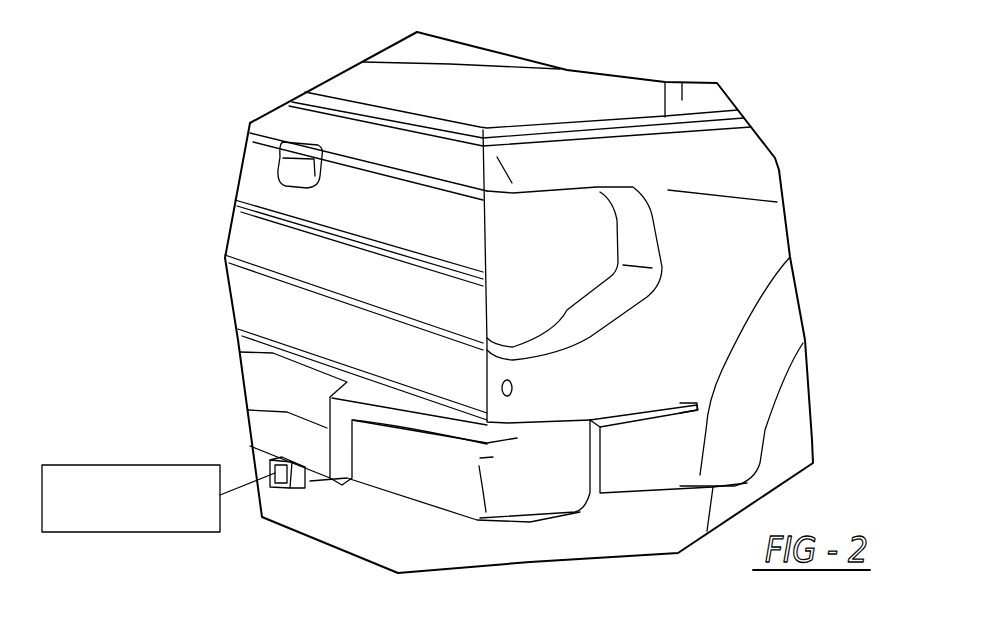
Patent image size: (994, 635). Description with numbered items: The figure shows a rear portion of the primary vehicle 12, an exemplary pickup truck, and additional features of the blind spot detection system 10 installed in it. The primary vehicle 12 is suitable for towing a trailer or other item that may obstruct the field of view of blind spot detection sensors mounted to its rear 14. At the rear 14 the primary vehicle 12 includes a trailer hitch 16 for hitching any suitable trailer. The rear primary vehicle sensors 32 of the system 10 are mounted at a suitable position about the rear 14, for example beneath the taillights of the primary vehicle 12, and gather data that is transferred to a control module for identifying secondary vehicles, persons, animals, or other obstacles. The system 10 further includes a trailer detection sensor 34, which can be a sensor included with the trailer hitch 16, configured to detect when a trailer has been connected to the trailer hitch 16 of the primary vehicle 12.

The blind spot detection system 10 is at (485, 314).
The primary vehicle 12 is at (747, 167).
The rear 14 is at (263, 248).
The trailer hitch 16 is at (300, 488).
The rear primary vehicle sensors 32 is at (510, 395).
The trailer detection sensor 34 is at (123, 464).